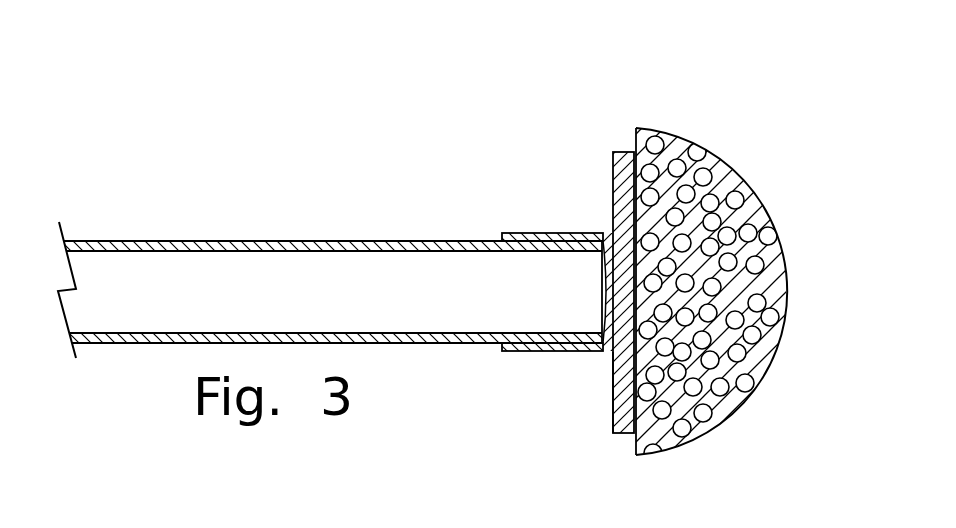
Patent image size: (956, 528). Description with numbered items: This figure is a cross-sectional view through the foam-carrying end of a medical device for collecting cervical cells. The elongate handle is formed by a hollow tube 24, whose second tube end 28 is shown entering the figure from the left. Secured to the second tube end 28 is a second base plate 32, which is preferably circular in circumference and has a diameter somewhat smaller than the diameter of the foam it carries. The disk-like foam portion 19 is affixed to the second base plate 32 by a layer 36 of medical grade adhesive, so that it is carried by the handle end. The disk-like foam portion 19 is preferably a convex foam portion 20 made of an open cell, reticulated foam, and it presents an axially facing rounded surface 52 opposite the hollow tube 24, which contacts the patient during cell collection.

The disk-like foam portion 19 is at (779, 234).
The convex foam portion 20 is at (747, 271).
The hollow tube 24 is at (345, 238).
The second tube end 28 is at (612, 232).
The second base plate 32 is at (630, 158).
The layer of medical grade adhesive 36 is at (613, 402).
The axially facing rounded surface 52 is at (747, 183).